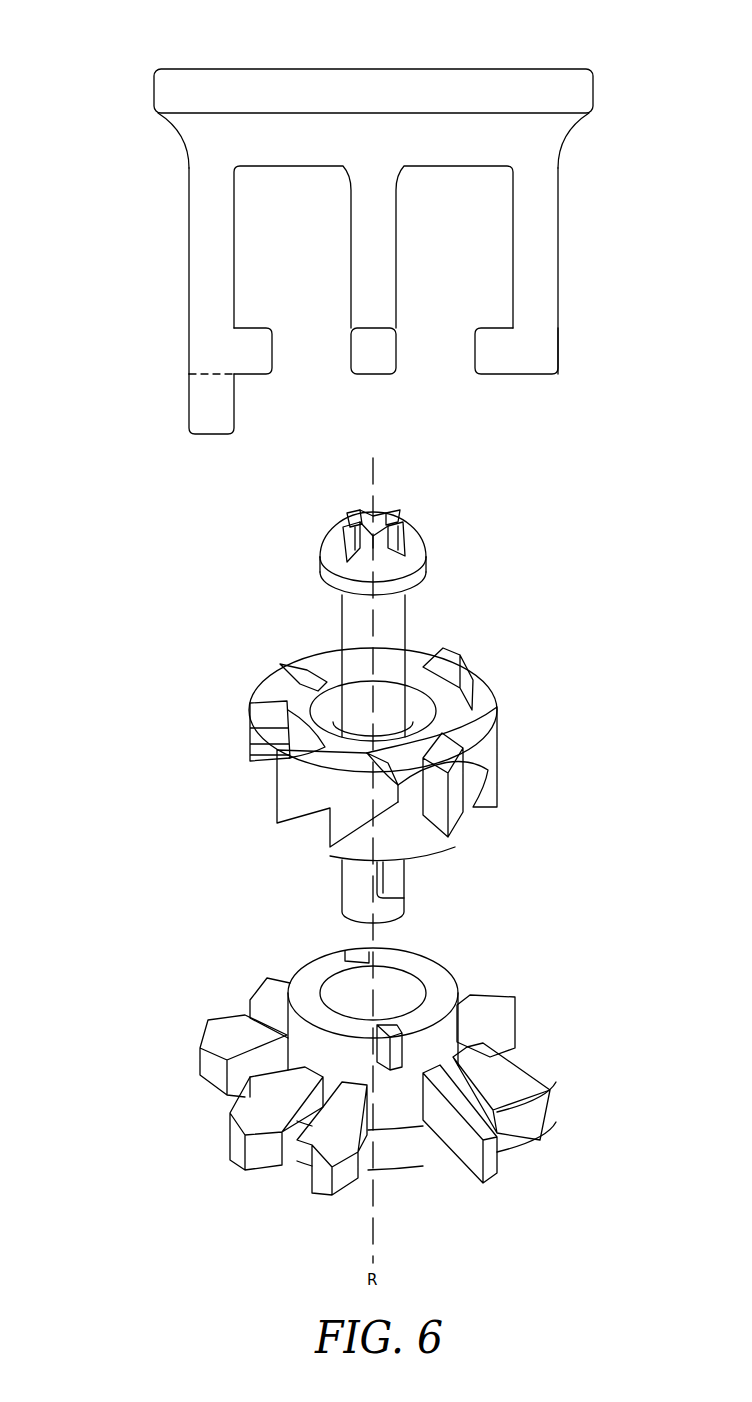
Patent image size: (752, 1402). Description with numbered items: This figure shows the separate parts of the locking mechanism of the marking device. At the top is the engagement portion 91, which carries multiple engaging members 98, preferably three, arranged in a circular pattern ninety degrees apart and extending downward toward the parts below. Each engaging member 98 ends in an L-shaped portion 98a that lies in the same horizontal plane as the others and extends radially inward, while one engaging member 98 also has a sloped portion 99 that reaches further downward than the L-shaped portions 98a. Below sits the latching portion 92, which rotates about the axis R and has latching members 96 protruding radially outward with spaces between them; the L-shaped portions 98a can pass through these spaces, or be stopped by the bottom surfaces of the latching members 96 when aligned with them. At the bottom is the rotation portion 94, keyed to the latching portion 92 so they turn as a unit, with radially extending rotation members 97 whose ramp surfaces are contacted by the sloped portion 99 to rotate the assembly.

The engagement portion 91 is at (538, 69).
The engaging members 98 is at (203, 274).
The L-shaped portion 98a is at (475, 348).
The sloped portion 99 is at (189, 402).
The latching portion 92 is at (323, 677).
The latching members 96 is at (455, 857).
The rotation portion 94 is at (315, 970).
The rotation members 97 is at (495, 1155).